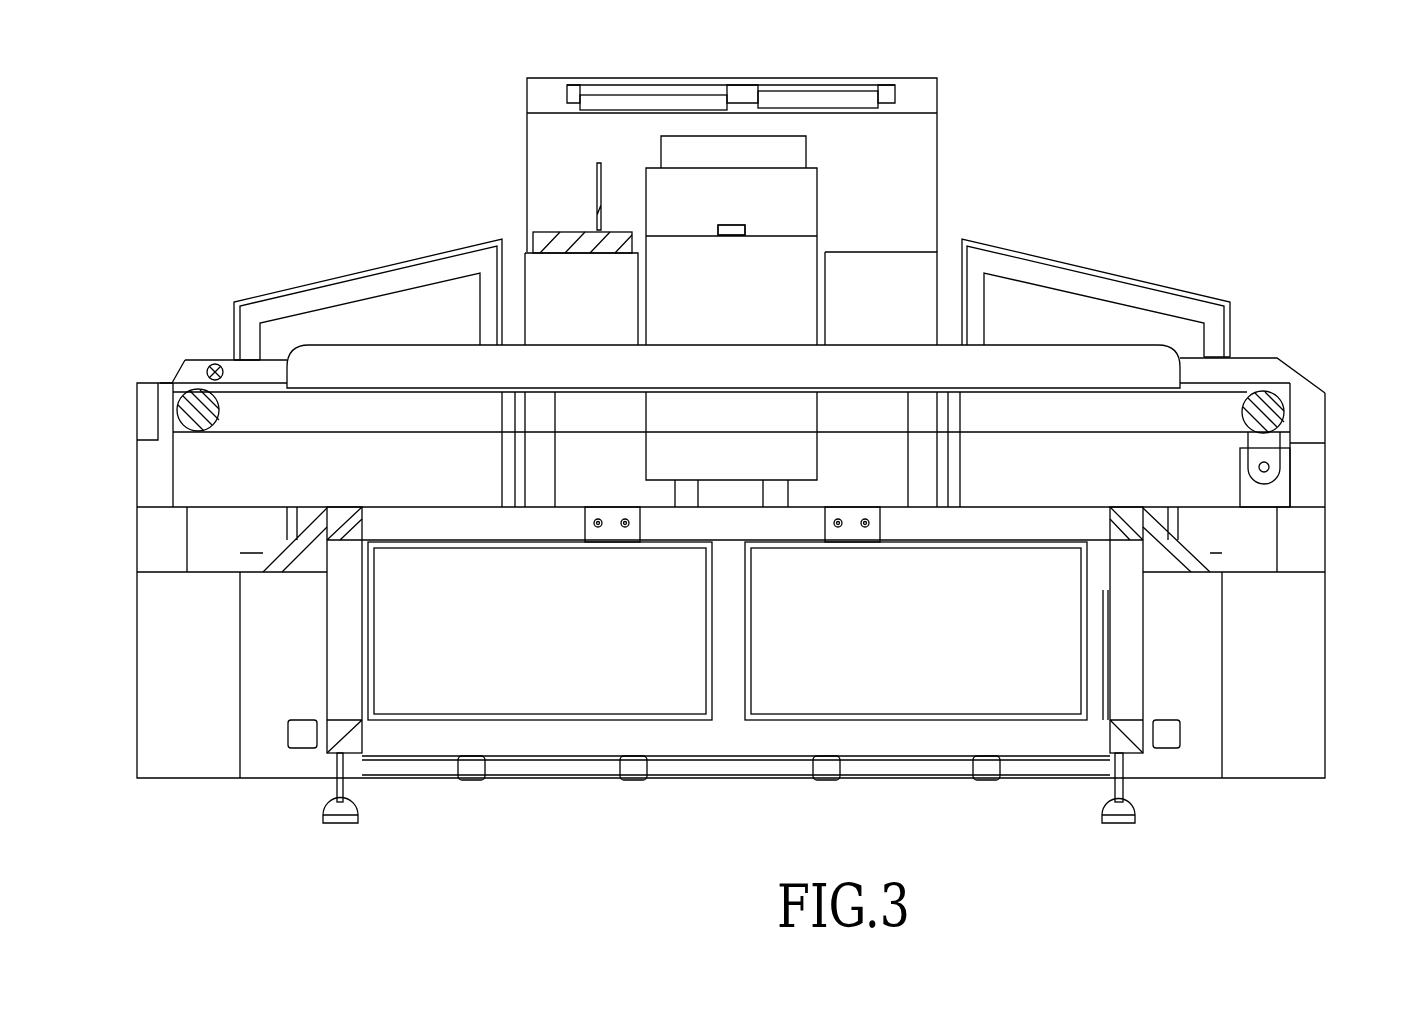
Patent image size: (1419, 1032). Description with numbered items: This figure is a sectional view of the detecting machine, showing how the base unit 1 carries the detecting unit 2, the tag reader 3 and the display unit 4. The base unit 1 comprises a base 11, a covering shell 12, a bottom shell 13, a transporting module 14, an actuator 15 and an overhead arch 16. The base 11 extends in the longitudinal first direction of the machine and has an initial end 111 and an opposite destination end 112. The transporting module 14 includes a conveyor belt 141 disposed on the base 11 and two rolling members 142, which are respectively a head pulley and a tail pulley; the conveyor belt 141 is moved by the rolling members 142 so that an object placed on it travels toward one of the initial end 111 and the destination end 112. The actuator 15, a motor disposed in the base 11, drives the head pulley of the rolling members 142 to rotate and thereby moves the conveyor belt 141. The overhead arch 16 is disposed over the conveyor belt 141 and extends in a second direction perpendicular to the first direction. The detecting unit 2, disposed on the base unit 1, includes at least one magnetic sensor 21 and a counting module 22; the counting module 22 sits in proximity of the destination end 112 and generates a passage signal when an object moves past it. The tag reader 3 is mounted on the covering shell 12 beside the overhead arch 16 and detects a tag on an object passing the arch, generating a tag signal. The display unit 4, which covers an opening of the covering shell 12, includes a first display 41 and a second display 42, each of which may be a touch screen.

The base unit 1 is at (940, 140).
The base 11 is at (1122, 790).
The covering shell 12 is at (940, 87).
The bottom shell 13 is at (1327, 668).
The transporting module 14 is at (1240, 388).
The conveyor belt 141 is at (237, 382).
The rolling members 142 is at (195, 398).
The actuator 15 is at (1283, 490).
The overhead arch 16 is at (818, 218).
The detecting unit 2 is at (735, 224).
The magnetic sensor 21 is at (731, 230).
The counting module 22 is at (208, 367).
The tag reader 3 is at (532, 237).
The display unit 4 is at (598, 113).
The first display 41 is at (822, 97).
The second display 42 is at (612, 95).
The initial end 111 is at (1290, 418).
The destination end 112 is at (188, 388).